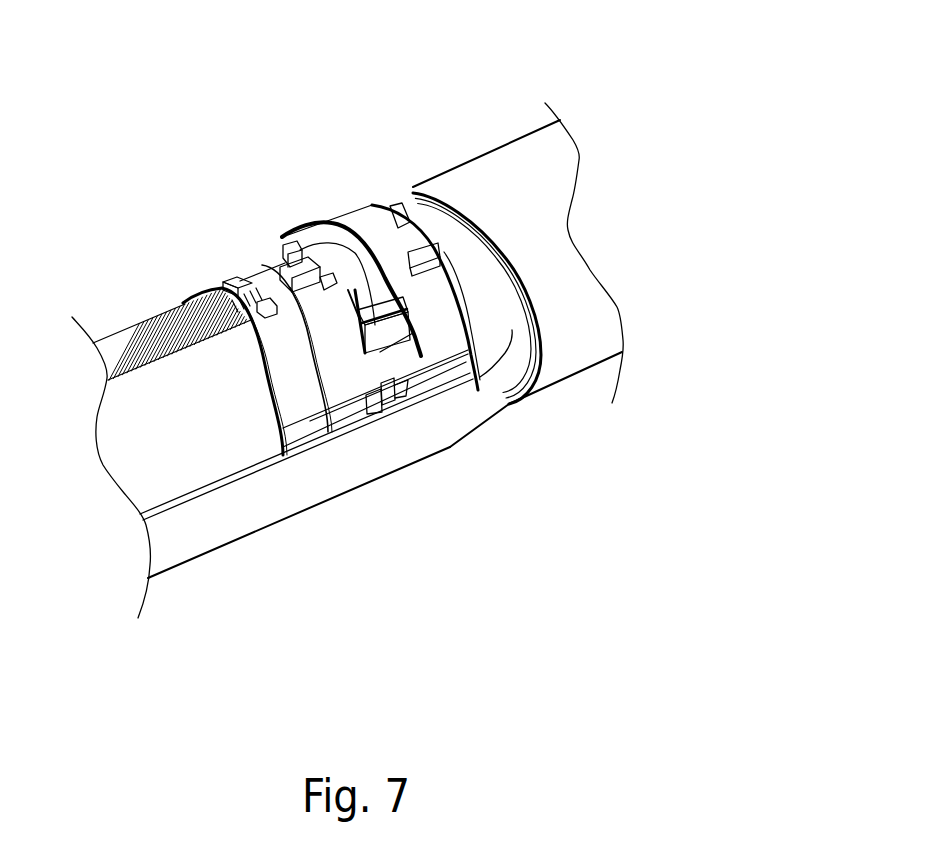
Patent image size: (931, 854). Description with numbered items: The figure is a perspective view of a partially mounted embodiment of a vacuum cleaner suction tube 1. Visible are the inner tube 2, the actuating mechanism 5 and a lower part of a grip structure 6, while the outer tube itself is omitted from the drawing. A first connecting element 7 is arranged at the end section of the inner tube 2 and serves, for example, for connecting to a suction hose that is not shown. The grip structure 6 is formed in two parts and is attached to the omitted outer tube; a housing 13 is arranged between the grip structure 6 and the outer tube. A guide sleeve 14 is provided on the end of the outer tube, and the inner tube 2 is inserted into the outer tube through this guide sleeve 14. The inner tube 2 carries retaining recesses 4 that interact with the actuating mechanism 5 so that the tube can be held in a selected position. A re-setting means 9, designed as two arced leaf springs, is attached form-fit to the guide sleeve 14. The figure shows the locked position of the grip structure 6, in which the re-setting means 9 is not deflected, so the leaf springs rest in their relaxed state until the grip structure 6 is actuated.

The vacuum cleaner suction tube 1 is at (198, 195).
The inner tube 2 is at (158, 473).
The retaining recesses 4 is at (150, 318).
The actuating mechanism 5 is at (325, 200).
The grip structure 6 is at (453, 417).
The first connecting element 7 is at (513, 167).
The re-setting means 9 is at (362, 333).
The housing 13 is at (367, 228).
The guide sleeve 14 is at (387, 360).